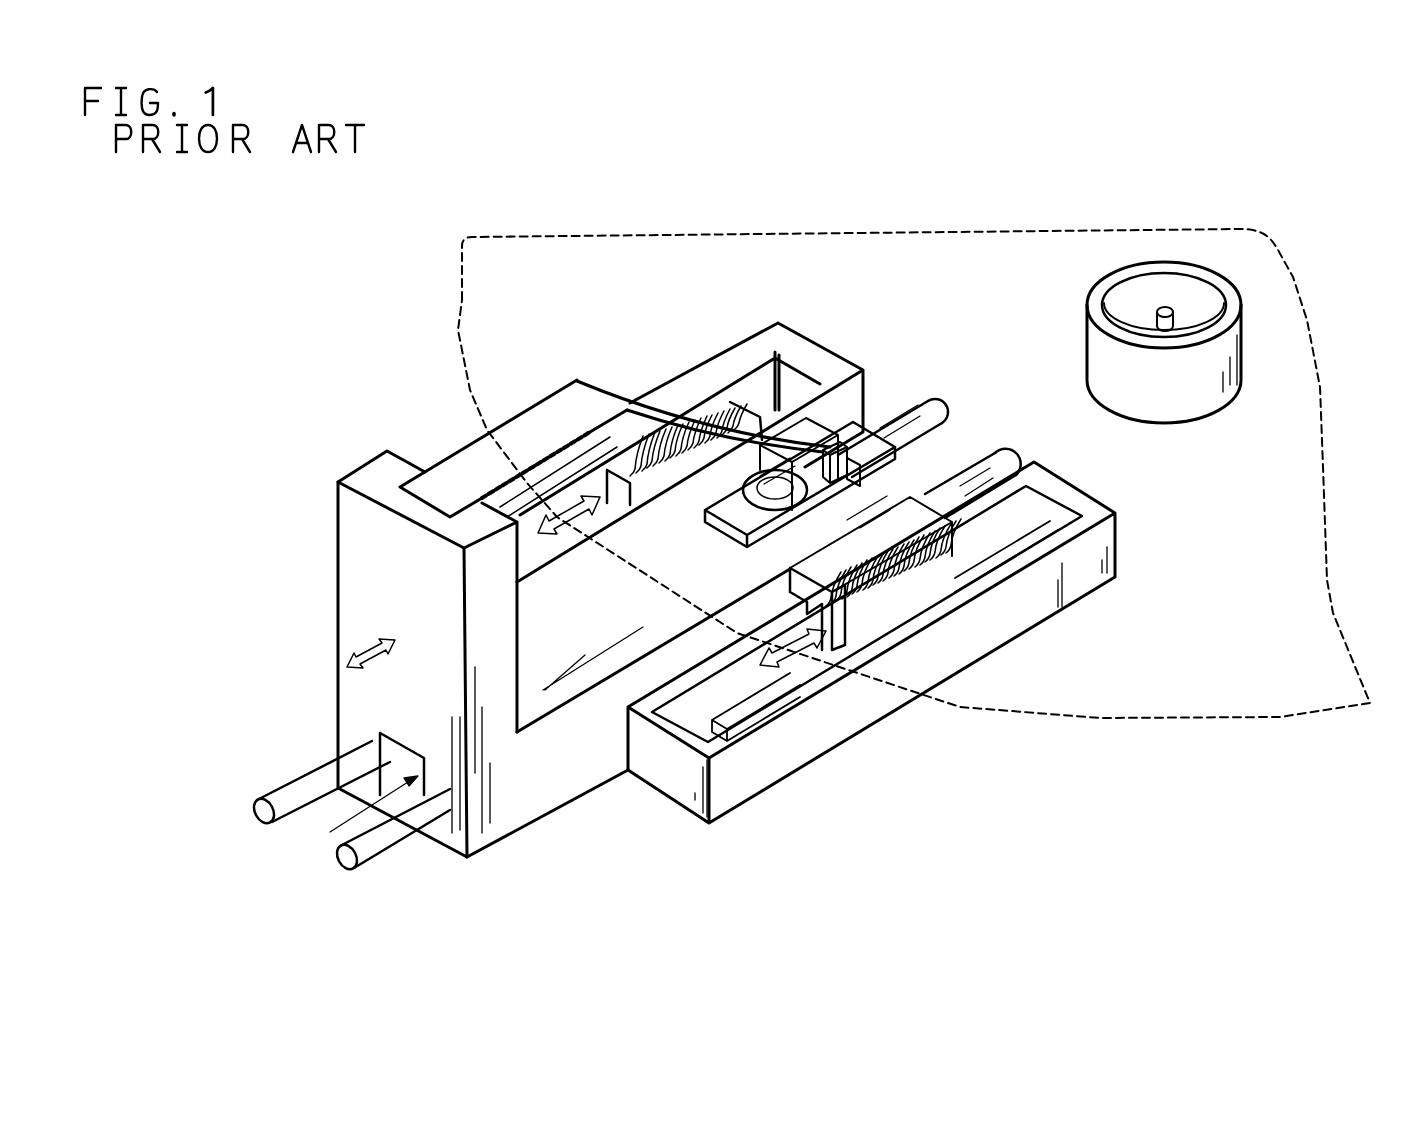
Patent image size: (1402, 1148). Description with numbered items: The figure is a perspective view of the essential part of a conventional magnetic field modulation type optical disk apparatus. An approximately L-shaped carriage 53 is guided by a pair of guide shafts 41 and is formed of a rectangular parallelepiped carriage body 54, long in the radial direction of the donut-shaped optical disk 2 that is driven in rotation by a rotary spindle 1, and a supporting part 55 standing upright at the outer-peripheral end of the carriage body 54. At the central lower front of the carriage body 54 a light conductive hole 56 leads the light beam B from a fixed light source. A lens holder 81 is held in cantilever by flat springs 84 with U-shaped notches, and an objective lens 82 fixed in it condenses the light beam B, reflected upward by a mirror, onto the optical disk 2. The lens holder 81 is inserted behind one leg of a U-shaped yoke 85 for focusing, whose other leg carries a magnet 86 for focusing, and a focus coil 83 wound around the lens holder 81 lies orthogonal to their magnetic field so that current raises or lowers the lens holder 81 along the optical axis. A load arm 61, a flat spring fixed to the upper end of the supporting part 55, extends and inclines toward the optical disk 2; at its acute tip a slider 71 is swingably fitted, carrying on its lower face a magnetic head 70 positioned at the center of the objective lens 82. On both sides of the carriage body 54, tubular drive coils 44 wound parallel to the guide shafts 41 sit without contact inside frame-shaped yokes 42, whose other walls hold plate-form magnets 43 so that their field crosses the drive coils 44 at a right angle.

The rotary spindle 1 is at (1243, 328).
The optical disk 2 is at (1312, 748).
The guide shaft 41 is at (257, 720).
The yoke 42 is at (925, 815).
The magnet 43 is at (830, 820).
The drive coil 44 is at (1000, 785).
The carriage 53 is at (662, 853).
The carriage body 54 is at (597, 763).
The supporting part 55 is at (497, 680).
The light conductive hole 56 is at (392, 765).
The load arm 61 is at (463, 457).
The magnetic head 70 is at (790, 478).
The slider 71 is at (835, 452).
The lens holder 81 is at (770, 490).
The objective lens 82 is at (975, 505).
The focus coil 83 is at (900, 475).
The flat spring 84 is at (578, 428).
The yoke for focusing 85 is at (840, 450).
The magnet for focusing 86 is at (862, 452).
The light beam B is at (330, 832).